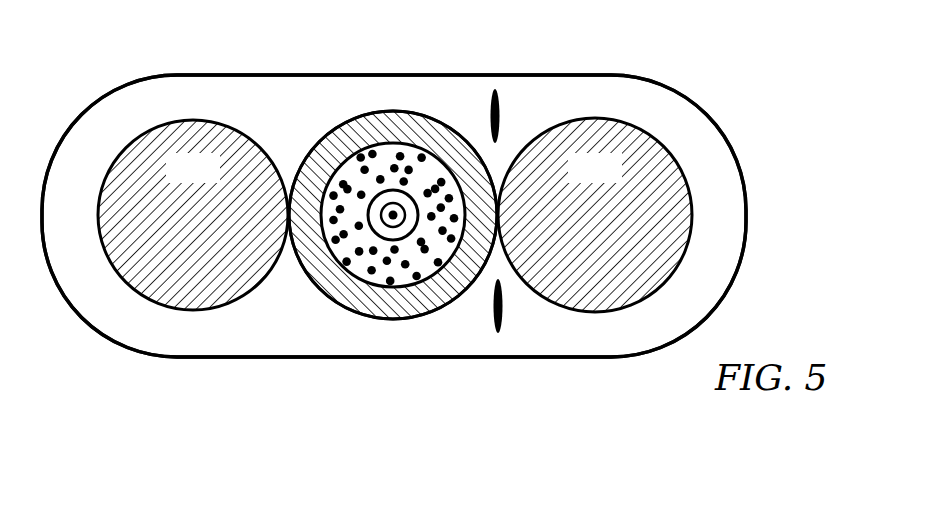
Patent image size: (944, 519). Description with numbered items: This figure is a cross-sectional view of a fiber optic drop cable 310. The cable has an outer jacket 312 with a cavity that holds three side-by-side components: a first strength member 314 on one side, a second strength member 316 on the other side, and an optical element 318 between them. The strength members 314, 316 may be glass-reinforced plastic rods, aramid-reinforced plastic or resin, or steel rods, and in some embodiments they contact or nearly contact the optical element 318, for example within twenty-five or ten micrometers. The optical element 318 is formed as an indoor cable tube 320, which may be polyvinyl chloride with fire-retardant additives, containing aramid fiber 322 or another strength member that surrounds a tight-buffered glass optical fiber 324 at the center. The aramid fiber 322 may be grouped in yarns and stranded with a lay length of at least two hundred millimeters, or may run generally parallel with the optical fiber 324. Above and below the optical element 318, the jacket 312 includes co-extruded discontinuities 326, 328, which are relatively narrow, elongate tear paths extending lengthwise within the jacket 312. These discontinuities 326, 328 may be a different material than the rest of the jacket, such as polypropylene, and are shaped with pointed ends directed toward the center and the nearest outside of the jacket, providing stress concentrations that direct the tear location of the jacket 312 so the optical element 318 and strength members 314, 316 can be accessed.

The fiber optic drop cable 310 is at (742, 87).
The jacket 312 is at (722, 190).
The first strength member 314 is at (219, 184).
The second strength member 316 is at (621, 184).
The optical element 318 is at (304, 110).
The indoor cable tube 320 is at (417, 137).
The aramid fiber 322 is at (375, 153).
The tight-buffered glass optical fiber 324 is at (408, 207).
The co-extruded discontinuity 326 is at (499, 120).
The co-extruded discontinuity 328 is at (503, 308).